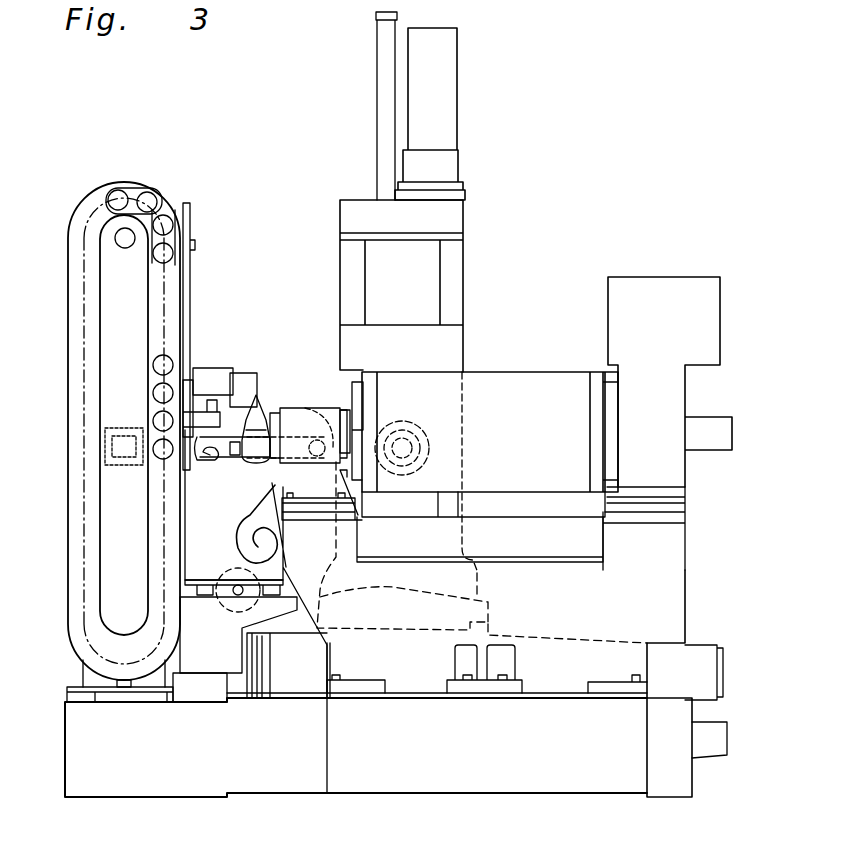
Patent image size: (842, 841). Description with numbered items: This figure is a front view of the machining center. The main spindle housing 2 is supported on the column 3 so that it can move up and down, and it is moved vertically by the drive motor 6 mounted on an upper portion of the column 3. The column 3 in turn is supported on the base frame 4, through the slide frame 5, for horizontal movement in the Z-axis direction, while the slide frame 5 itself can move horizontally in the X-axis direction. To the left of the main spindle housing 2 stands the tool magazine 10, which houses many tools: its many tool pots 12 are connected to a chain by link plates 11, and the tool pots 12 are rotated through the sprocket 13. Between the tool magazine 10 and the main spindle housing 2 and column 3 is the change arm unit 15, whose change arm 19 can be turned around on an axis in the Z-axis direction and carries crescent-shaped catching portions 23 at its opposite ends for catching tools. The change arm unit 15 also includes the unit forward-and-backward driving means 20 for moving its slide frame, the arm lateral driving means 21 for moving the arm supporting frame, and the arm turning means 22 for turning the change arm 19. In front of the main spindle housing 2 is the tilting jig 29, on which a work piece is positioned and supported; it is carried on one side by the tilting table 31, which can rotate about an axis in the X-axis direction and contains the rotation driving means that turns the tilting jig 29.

The main spindle housing 2 is at (412, 432).
The column 3 is at (465, 270).
The base frame 4 is at (112, 776).
The slide frame 5 is at (488, 615).
The drive motor 6 is at (448, 100).
The tool magazine 10 is at (68, 272).
The link plates 11 is at (178, 342).
The tool pots 12 is at (152, 368).
The sprocket 13 is at (125, 248).
The change arm unit 15 is at (270, 383).
The change arm 19 is at (222, 455).
The unit forward-and-backward driving means 20 is at (220, 606).
The arm lateral driving means 21 is at (218, 366).
The arm turning means 22 is at (230, 522).
The catching portions 23 is at (330, 428).
The tilting jig 29 is at (560, 378).
The tilting table 31 is at (696, 295).